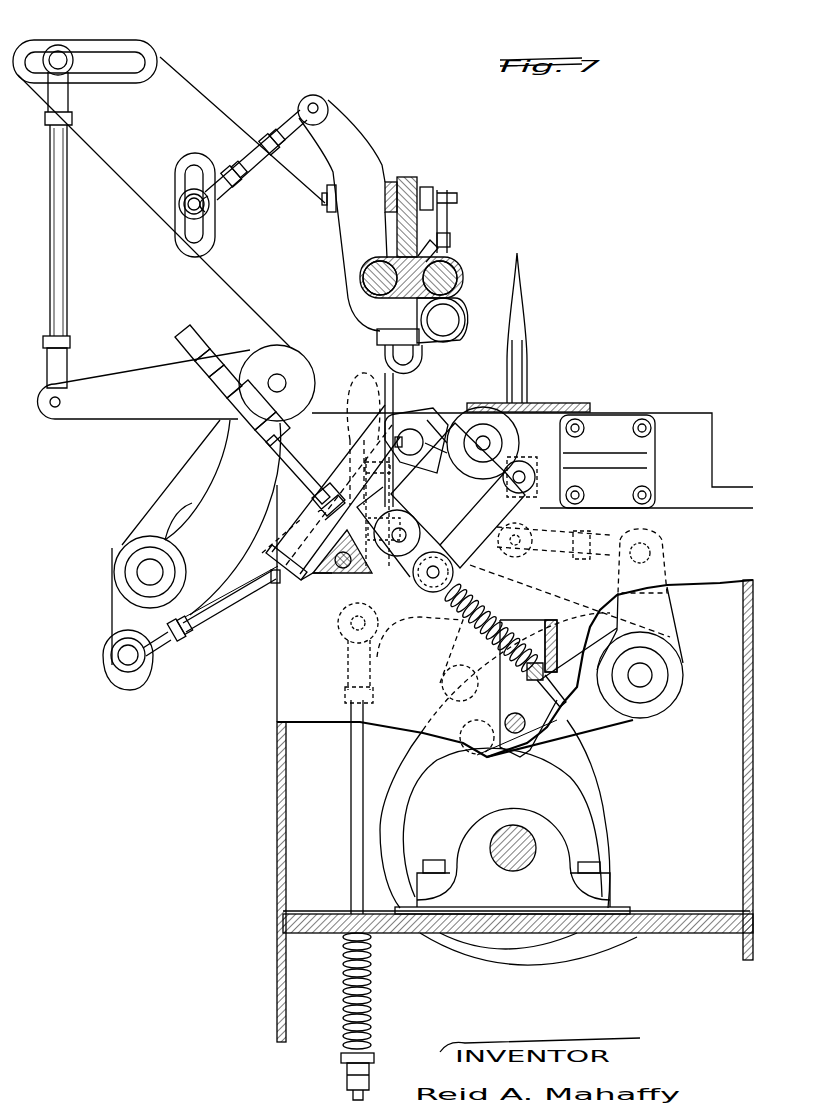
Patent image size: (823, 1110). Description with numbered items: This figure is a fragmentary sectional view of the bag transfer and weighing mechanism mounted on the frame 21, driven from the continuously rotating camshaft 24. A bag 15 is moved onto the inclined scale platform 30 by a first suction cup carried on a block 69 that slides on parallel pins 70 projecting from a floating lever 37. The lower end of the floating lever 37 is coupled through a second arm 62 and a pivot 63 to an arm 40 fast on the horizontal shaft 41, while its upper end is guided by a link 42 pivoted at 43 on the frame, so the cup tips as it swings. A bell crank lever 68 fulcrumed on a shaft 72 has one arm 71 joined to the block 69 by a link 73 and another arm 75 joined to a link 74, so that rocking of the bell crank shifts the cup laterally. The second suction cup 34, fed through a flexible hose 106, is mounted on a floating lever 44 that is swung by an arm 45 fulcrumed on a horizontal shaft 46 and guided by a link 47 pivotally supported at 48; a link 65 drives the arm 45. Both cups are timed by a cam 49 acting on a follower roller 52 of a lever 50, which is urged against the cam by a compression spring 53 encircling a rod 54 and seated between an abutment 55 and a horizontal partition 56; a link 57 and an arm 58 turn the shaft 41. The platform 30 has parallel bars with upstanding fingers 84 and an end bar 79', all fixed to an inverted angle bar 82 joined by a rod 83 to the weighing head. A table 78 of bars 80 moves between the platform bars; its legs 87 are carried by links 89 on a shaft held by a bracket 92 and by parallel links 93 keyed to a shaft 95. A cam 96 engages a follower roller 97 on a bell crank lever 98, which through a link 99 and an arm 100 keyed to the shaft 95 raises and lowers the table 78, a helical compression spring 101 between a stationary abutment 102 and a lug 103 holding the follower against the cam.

The bag 15 is at (527, 322).
The frame 21 is at (272, 798).
The camshaft 24 is at (516, 870).
The scale platform 30 is at (310, 530).
The suction cup 34 is at (338, 478).
The floating lever 37 is at (364, 138).
The arm 40 is at (385, 364).
The horizontal shaft 41 is at (416, 435).
The link 42 is at (250, 152).
The pivot 43 is at (180, 203).
The floating lever 44 is at (118, 378).
The arm 45 is at (218, 475).
The horizontal shaft 46 is at (142, 572).
The link 47 is at (51, 220).
The pivotal support 48 is at (62, 52).
The cam 49 is at (600, 792).
The lever 50 is at (440, 620).
The follower roller 52 is at (443, 688).
The compression spring 53 is at (343, 1000).
The rod 54 is at (351, 851).
The abutment 55 is at (343, 1060).
The horizontal partition 56 is at (325, 931).
The link 57 is at (365, 438).
The arm 58 is at (350, 383).
The second arm 62 is at (377, 336).
The pivot 63 is at (462, 322).
The link 65 is at (228, 602).
The bell crank lever 68 is at (428, 160).
The block 69 is at (427, 283).
The pins 70 is at (457, 273).
The arm 71 is at (410, 176).
The shaft 72 is at (438, 221).
The link 73 is at (427, 247).
The link 74 is at (452, 250).
The arm 75 is at (432, 190).
The table 78 is at (322, 512).
The end bar 79' is at (234, 572).
The bars 80 is at (272, 584).
The angle bar 82 is at (367, 573).
The rod 83 is at (345, 568).
The fingers 84 is at (268, 552).
The legs 87 is at (405, 560).
The links 89 is at (450, 490).
The bracket 92 is at (565, 446).
The links 93 is at (478, 537).
The shaft 95 is at (522, 468).
The cam 96 is at (588, 846).
The follower roller 97 is at (461, 746).
The bell crank lever 98 is at (622, 722).
The link 99 is at (607, 543).
The arm 100 is at (540, 527).
The helical compression spring 101 is at (485, 610).
The stationary abutment 102 is at (515, 680).
The lug 103 is at (455, 572).
The flexible hose 106 is at (180, 343).